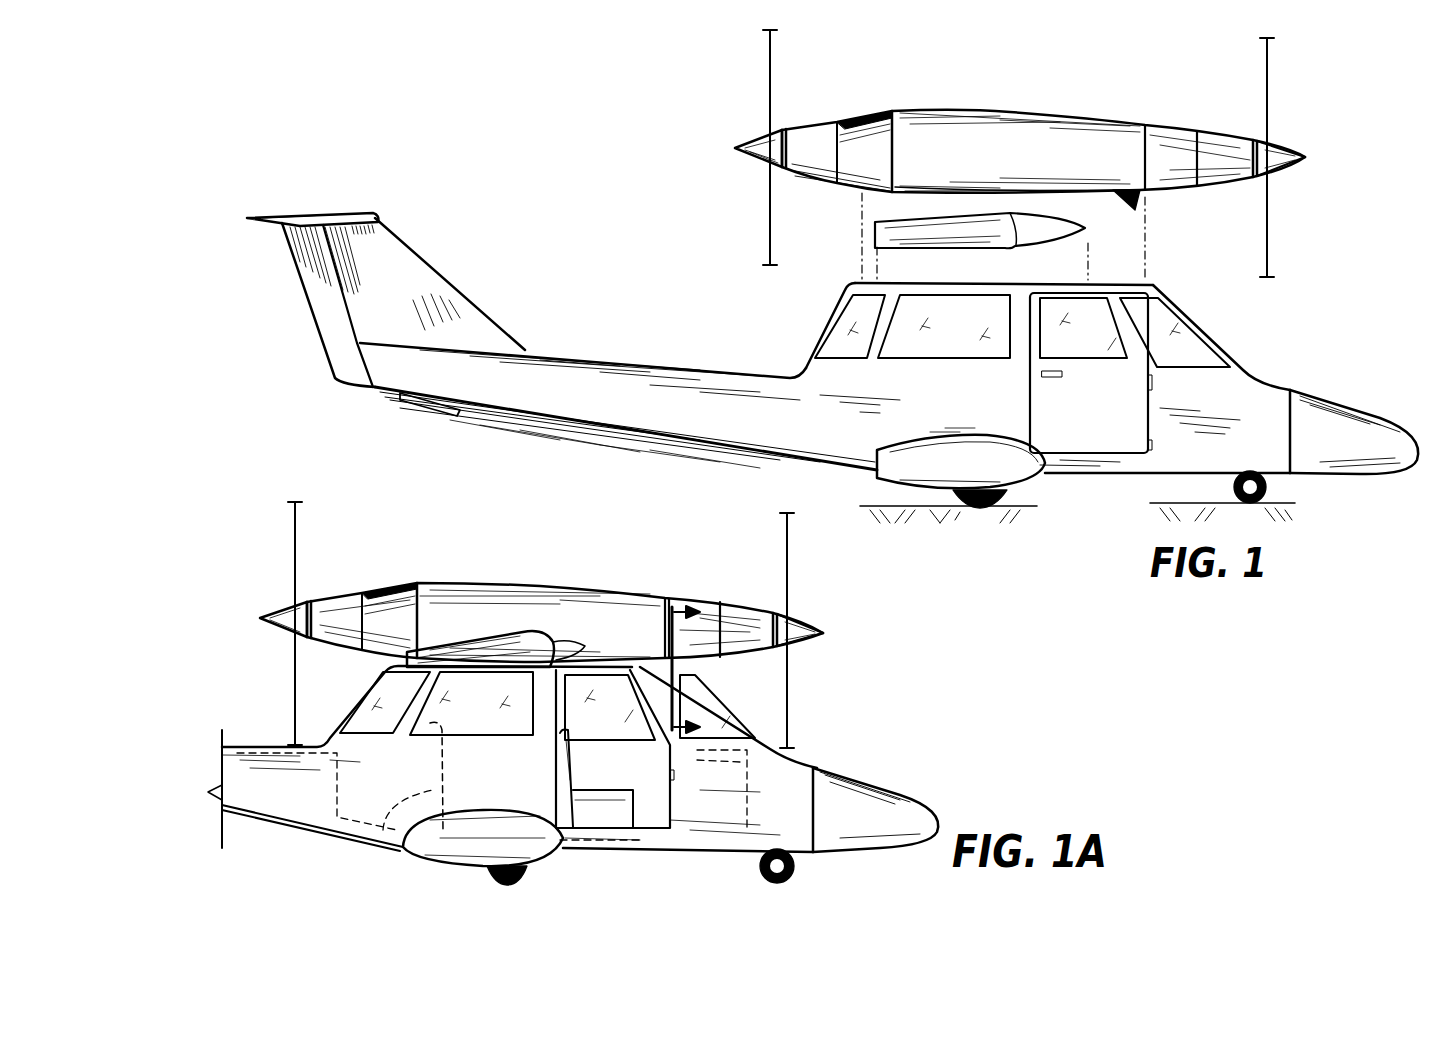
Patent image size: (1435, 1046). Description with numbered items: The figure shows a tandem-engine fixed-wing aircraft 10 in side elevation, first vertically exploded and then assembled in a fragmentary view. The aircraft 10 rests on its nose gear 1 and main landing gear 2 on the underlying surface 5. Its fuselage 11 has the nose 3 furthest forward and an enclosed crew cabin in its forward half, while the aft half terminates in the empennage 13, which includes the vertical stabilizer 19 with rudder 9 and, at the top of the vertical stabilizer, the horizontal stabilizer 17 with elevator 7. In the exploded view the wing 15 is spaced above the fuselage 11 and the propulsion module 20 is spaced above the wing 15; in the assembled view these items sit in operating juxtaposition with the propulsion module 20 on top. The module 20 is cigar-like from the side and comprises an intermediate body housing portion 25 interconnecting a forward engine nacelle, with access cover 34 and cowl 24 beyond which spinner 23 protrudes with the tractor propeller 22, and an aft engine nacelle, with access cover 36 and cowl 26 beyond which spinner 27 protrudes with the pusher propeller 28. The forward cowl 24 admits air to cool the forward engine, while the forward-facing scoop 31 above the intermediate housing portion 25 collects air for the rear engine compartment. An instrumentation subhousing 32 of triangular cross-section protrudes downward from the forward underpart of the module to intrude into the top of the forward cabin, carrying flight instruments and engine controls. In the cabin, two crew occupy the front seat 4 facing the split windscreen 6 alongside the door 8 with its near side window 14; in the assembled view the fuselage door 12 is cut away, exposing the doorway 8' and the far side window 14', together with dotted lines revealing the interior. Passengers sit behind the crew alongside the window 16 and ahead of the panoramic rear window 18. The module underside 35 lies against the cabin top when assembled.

In FIG. 1, the nose gear 1 is at (1277, 490).
In FIG. 1, the main landing gear 2 is at (970, 508).
In FIG. 1, the nose 3 is at (1370, 435).
In FIG. 1A, the nose 3 is at (890, 810).
In FIG. 1A, the front seat 4 is at (380, 850).
In FIG. 1, the underlying surface 5 is at (832, 505).
In FIG. 1, the split windscreen 6 is at (1190, 352).
In FIG. 1A, the split windscreen 6 is at (720, 723).
In FIG. 1, the elevator 7 is at (258, 216).
In FIG. 1, the door 8 is at (1227, 411).
In FIG. 1A, the doorway 8' is at (622, 779).
In FIG. 1, the rudder 9 is at (330, 346).
In FIG. 1, the aircraft 10 is at (647, 243).
In FIG. 1A, the aircraft 10 is at (225, 530).
In FIG. 1, the fuselage 11 is at (795, 457).
In FIG. 1A, the fuselage 11 is at (235, 771).
In FIG. 1, the fuselage door 12 is at (1100, 440).
In FIG. 1, the empennage 13 is at (410, 242).
In FIG. 1, the near side window 14 is at (1132, 319).
In FIG. 1A, the far side window 14' is at (653, 701).
In FIG. 1, the wing 15 is at (1040, 240).
In FIG. 1A, the wing 15 is at (513, 640).
In FIG. 1, the window 16 is at (865, 303).
In FIG. 1A, the window 16 is at (437, 686).
In FIG. 1, the horizontal stabilizer 17 is at (328, 212).
In FIG. 1, the panoramic rear window 18 is at (840, 338).
In FIG. 1A, the panoramic rear window 18 is at (370, 707).
In FIG. 1, the vertical stabilizer 19 is at (480, 330).
In FIG. 1, the propulsion module 20 is at (975, 113).
In FIG. 1A, the propulsion module 20 is at (480, 585).
In FIG. 1, the tractor propeller 22 is at (1270, 222).
In FIG. 1A, the tractor propeller 22 is at (790, 688).
In FIG. 1, the spinner 23 is at (1290, 150).
In FIG. 1A, the spinner 23 is at (820, 625).
In FIG. 1, the cowl 24 is at (1232, 165).
In FIG. 1A, the cowl 24 is at (740, 613).
In FIG. 1, the intermediate body housing portion 25 is at (1045, 135).
In FIG. 1A, the intermediate body housing portion 25 is at (567, 595).
In FIG. 1, the cowl 26 is at (818, 185).
In FIG. 1A, the cowl 26 is at (330, 607).
In FIG. 1, the spinner 27 is at (755, 145).
In FIG. 1A, the spinner 27 is at (275, 607).
In FIG. 1, the pusher propeller 28 is at (770, 200).
In FIG. 1A, the pusher propeller 28 is at (295, 680).
In FIG. 1, the forward-facing scoop 31 is at (882, 130).
In FIG. 1A, the forward-facing scoop 31 is at (413, 600).
In FIG. 1, the instrumentation subhousing 32 is at (1125, 205).
In FIG. 1, the access cover 34 is at (1172, 130).
In FIG. 1A, the access cover 34 is at (700, 605).
In FIG. 1, the pod underside 35 is at (960, 175).
In FIG. 1, the access cover 36 is at (857, 145).
In FIG. 1A, the access cover 36 is at (380, 615).